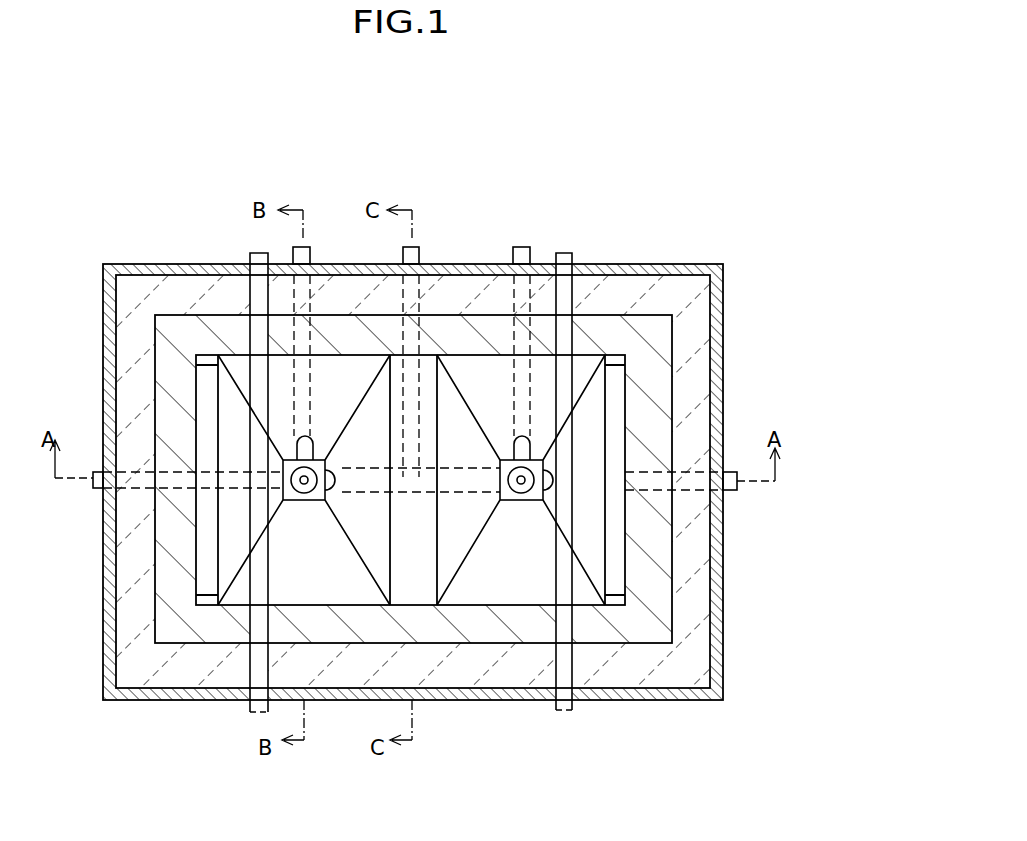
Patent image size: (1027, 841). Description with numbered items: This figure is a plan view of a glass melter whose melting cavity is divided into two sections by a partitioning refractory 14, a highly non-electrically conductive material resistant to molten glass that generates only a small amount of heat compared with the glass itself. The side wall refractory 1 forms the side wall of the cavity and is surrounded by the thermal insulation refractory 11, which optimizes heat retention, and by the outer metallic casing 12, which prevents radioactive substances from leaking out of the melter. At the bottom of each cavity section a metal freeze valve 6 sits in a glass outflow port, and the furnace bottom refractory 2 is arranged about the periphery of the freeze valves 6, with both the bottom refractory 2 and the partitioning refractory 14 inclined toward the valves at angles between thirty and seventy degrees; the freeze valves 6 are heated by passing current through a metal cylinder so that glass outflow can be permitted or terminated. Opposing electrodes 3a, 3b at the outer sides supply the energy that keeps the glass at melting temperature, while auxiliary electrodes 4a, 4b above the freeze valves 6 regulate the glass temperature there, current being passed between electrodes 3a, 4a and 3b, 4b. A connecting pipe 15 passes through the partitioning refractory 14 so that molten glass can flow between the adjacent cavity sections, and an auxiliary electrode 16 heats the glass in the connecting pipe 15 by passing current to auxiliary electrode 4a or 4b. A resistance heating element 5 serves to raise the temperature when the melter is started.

The side wall refractory 1 is at (687, 565).
The furnace bottom refractory 2 is at (597, 393).
The electrode 3a is at (207, 532).
The electrode 3b is at (615, 453).
The auxiliary electrode 4a is at (310, 252).
The auxiliary electrode 4b is at (517, 247).
The resistance heating element 5 is at (250, 253).
The freeze valves 6 is at (300, 498).
The thermal insulation refractory 11 is at (697, 307).
The casing 12 is at (686, 265).
The partitioning refractory 14 is at (442, 575).
The connecting pipe 15 is at (463, 495).
The auxiliary electrode 16 is at (418, 250).